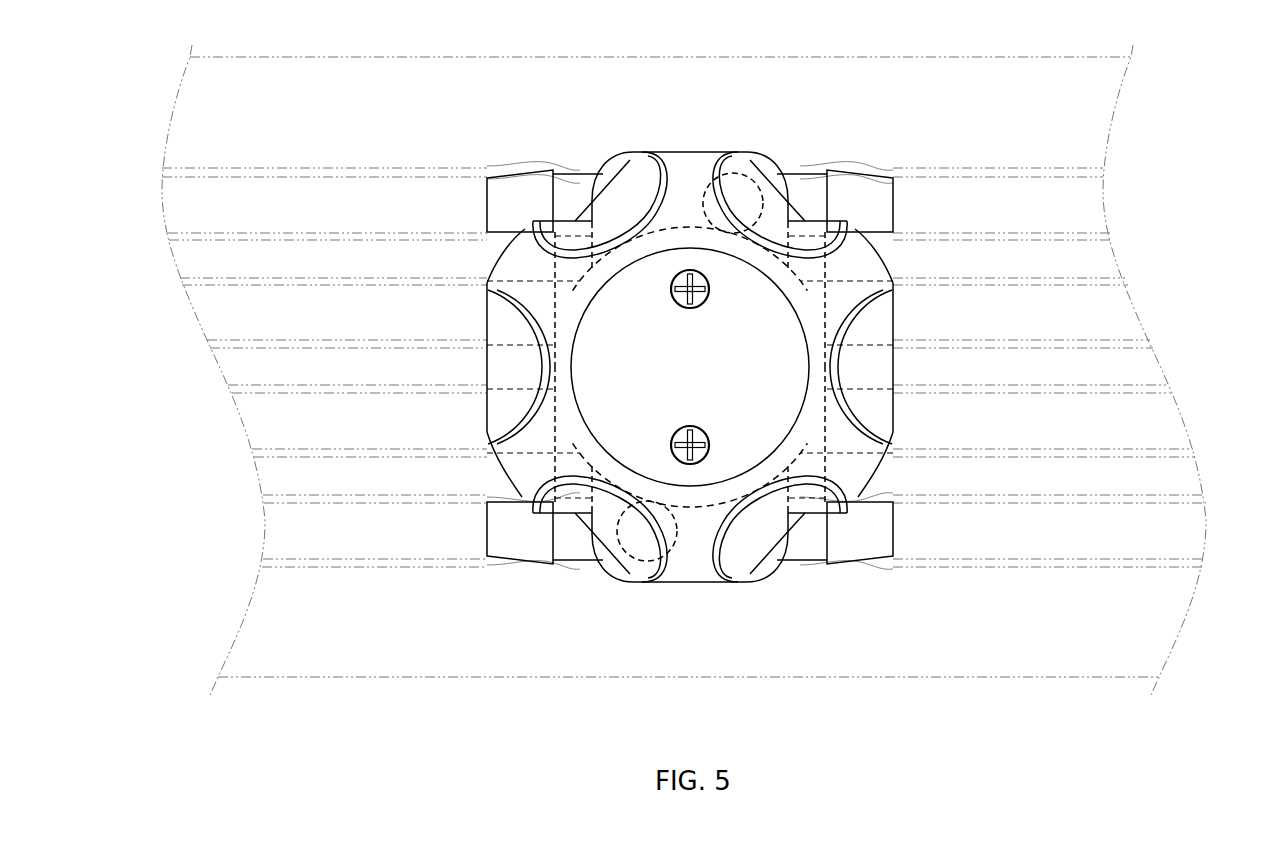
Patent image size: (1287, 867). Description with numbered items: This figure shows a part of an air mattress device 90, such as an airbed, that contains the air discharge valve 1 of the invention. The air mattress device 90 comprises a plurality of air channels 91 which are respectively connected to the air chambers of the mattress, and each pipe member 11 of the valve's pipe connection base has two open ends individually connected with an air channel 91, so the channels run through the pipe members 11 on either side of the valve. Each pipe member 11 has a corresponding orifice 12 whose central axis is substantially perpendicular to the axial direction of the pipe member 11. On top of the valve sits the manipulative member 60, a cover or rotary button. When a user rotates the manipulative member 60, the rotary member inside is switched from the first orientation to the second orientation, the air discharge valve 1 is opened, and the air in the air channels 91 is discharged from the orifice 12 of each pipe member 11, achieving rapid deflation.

The air discharge valve 1 is at (690, 375).
The pipe member 11 is at (510, 190).
The orifice 12 is at (745, 192).
The manipulative member 60 is at (688, 168).
The air mattress device 90 is at (684, 351).
The air channel 91 is at (275, 529).